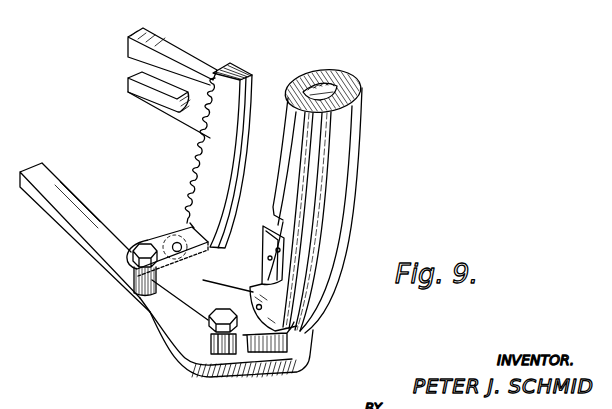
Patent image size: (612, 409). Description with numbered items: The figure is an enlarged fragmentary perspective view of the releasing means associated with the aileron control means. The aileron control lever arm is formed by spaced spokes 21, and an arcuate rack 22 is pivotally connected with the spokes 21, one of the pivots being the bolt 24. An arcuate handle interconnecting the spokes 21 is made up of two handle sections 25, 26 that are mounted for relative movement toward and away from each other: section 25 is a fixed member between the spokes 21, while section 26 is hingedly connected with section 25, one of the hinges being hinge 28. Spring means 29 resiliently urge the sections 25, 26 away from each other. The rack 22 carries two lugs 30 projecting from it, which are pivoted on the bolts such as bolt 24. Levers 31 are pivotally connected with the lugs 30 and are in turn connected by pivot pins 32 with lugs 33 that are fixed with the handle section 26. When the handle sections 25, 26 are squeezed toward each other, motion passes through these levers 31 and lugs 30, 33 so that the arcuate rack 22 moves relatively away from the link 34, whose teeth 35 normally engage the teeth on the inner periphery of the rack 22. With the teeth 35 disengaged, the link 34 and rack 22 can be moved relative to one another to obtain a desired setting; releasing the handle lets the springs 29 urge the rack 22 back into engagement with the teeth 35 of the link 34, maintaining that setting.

The spokes 21 is at (70, 220).
The arcuate rack 22 is at (218, 141).
The bolt 24 is at (125, 258).
The handle section 25 is at (334, 196).
The handle section 26 is at (287, 192).
The hinge 28 is at (272, 259).
The spring means 29 is at (347, 75).
The lugs 30 is at (160, 238).
The levers 31 is at (200, 303).
The pivot pins 32 is at (218, 317).
The lugs 33 is at (247, 331).
The link 34 is at (137, 105).
The teeth 35 is at (205, 133).